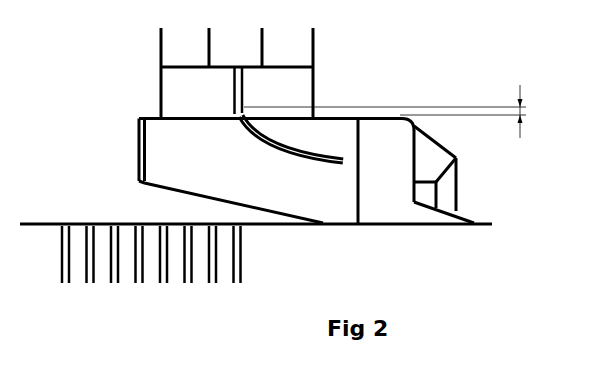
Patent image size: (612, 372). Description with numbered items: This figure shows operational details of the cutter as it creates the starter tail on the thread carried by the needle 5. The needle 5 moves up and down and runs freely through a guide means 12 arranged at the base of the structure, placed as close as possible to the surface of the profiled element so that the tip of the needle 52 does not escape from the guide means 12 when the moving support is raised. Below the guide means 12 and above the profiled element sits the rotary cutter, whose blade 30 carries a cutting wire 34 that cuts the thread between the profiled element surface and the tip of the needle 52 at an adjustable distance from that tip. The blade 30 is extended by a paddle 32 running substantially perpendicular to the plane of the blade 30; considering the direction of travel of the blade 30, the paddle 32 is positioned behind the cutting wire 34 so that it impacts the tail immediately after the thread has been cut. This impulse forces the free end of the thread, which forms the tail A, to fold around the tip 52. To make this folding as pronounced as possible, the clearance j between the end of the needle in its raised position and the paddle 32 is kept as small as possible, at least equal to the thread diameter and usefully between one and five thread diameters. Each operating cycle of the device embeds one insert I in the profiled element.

The guide means 12 is at (171, 42).
The needle 5 is at (222, 66).
The tip of the needle 52 is at (257, 105).
The tail A is at (265, 142).
The clearance j is at (387, 110).
The paddle 32 is at (290, 171).
The blade 30 is at (428, 207).
The cutting wire 34 is at (487, 213).
The insert I is at (86, 271).